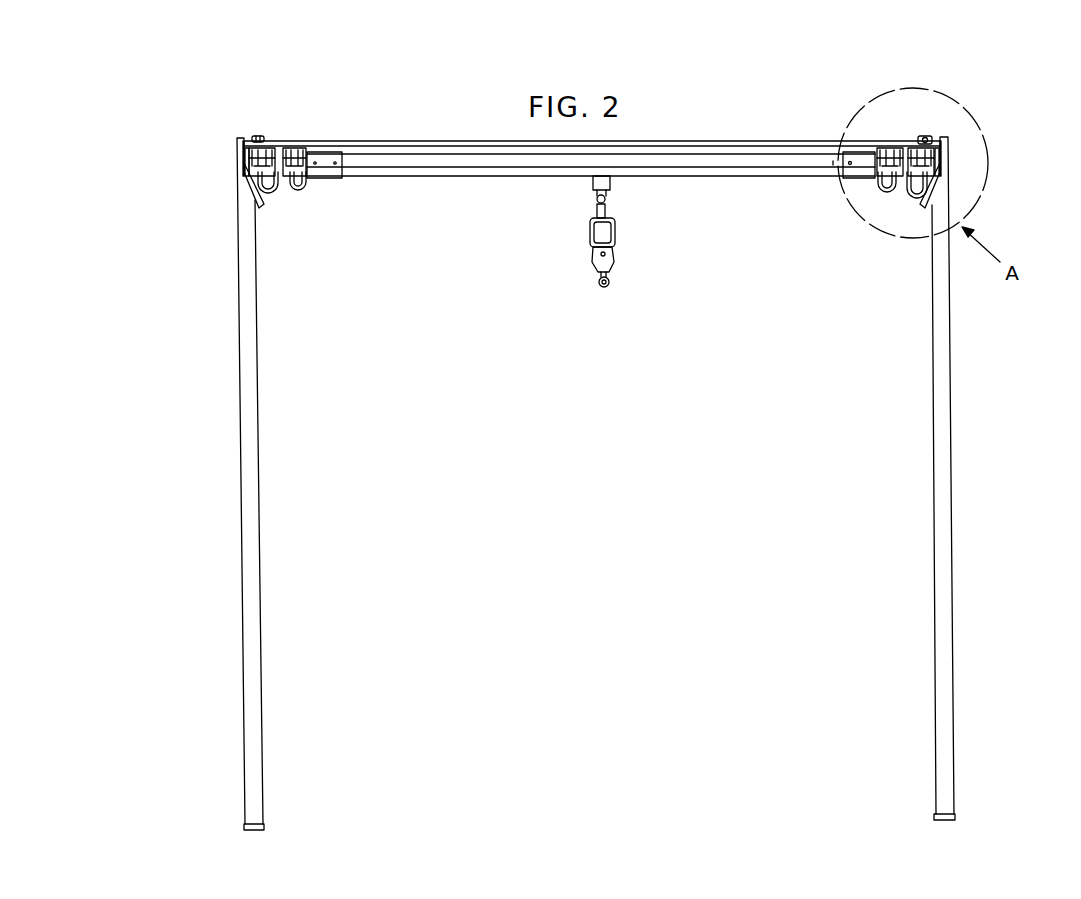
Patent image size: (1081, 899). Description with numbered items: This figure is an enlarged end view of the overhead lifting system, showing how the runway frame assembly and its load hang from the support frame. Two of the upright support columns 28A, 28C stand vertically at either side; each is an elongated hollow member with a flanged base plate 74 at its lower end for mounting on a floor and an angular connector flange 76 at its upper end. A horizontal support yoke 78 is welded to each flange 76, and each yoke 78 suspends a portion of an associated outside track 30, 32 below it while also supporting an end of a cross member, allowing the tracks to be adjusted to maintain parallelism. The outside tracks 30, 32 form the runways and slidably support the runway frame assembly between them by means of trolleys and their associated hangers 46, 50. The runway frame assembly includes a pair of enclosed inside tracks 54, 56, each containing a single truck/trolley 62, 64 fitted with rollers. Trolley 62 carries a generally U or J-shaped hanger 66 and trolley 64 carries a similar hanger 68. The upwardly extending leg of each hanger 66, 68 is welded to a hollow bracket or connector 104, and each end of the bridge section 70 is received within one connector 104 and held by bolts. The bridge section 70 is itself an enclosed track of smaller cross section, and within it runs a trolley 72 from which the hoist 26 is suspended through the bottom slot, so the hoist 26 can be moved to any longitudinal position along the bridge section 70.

The hoist 26 is at (615, 273).
The upright support column 28A is at (952, 495).
The upright support column 28C is at (259, 515).
The outside track 30 is at (945, 158).
The outside track 32 is at (243, 160).
The hanger 46 is at (917, 197).
The hanger 50 is at (270, 192).
The inside track 54 is at (890, 153).
The inside track 56 is at (293, 153).
The truck/trolley 62 is at (876, 150).
The truck/trolley 64 is at (312, 152).
The hanger 66 is at (888, 192).
The hanger 68 is at (308, 188).
The bridge section 70 is at (782, 177).
The trolley 72 is at (612, 190).
The base plate 74 is at (955, 815).
The angular connector flange 76 is at (947, 176).
The horizontal support yoke 78 is at (923, 143).
The bracket or connector 104 is at (860, 180).